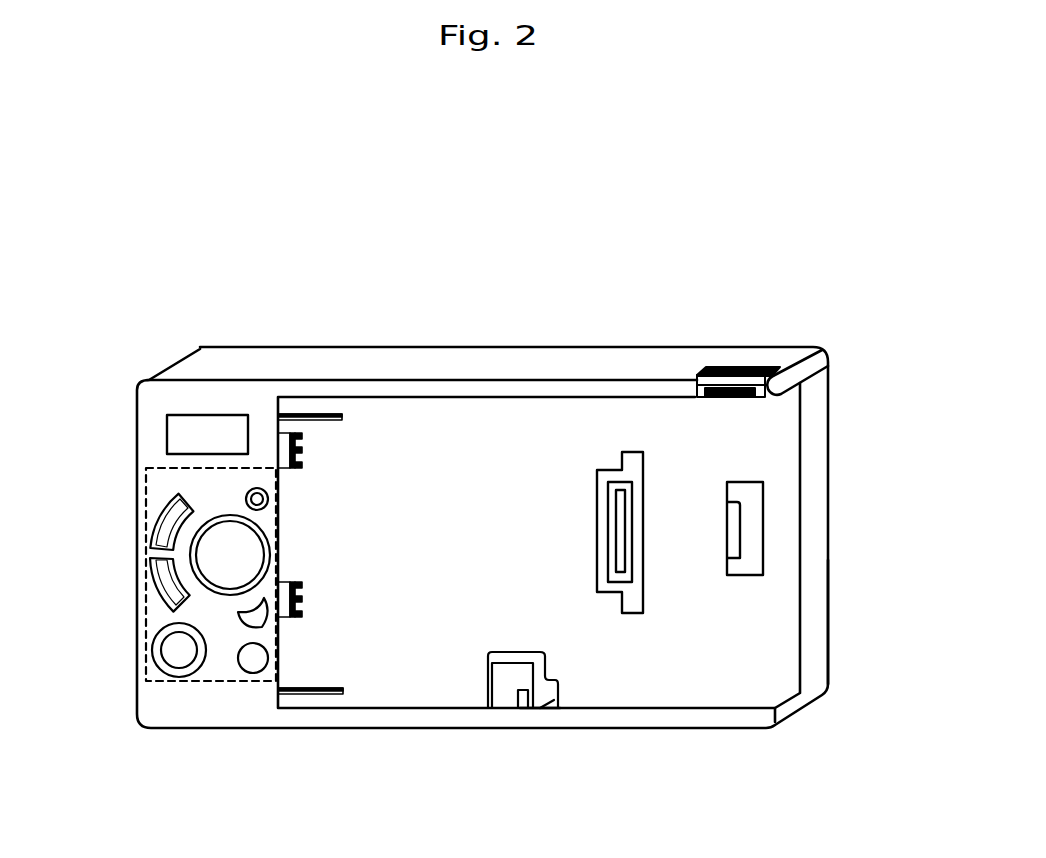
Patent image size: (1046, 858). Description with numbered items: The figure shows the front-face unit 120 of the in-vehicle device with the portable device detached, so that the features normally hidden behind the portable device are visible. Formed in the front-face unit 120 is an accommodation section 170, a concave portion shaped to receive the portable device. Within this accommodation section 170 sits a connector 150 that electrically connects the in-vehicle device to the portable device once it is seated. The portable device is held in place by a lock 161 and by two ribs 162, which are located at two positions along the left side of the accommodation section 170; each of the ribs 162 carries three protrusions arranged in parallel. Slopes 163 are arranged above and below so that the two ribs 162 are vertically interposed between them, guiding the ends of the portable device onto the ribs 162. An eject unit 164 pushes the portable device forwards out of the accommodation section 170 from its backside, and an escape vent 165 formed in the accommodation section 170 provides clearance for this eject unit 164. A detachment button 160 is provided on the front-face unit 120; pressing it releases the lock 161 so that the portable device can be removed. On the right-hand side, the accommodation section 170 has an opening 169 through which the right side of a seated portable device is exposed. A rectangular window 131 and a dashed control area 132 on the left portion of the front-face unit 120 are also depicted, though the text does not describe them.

The front-face unit 120 is at (192, 370).
The display window 131 is at (176, 437).
The operation section 132 is at (220, 681).
The connector 150 is at (620, 518).
The detachment button 160 is at (738, 373).
The lock 161 is at (735, 531).
The ribs 162 is at (302, 448).
The slopes 163 is at (342, 417).
The eject unit 164 is at (513, 672).
The escape vent 165 is at (537, 711).
The opening 169 is at (805, 607).
The accommodation section 170 is at (672, 673).